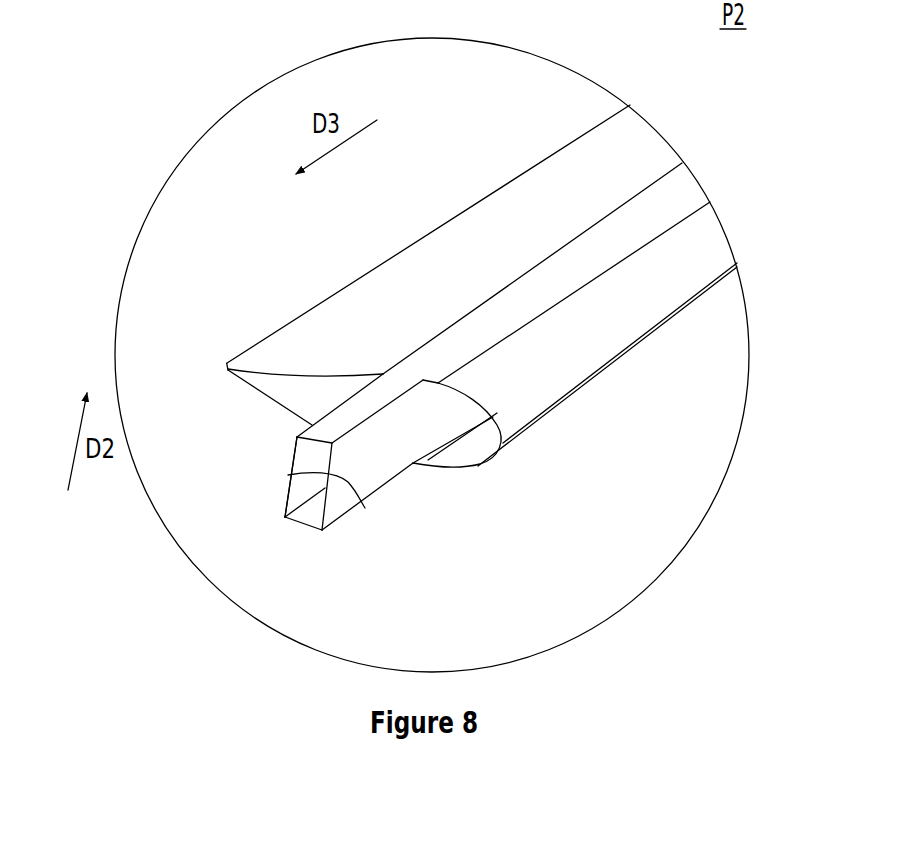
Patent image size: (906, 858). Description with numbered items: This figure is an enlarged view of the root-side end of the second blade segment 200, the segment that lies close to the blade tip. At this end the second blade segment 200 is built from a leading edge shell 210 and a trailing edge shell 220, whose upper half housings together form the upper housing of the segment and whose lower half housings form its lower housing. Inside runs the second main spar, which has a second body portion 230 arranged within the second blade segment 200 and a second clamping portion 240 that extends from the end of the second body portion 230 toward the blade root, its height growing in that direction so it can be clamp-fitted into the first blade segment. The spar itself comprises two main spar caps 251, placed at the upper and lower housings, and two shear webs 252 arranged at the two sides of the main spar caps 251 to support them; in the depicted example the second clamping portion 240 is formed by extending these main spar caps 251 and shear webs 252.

The second blade segment 200 is at (462, 186).
The leading edge shell 210 is at (573, 358).
The trailing edge shell 220 is at (315, 323).
The second body portion 230 is at (437, 420).
The second clamping portion 240 is at (322, 553).
The main spar caps 251 is at (296, 430).
The shear webs 252 is at (363, 465).